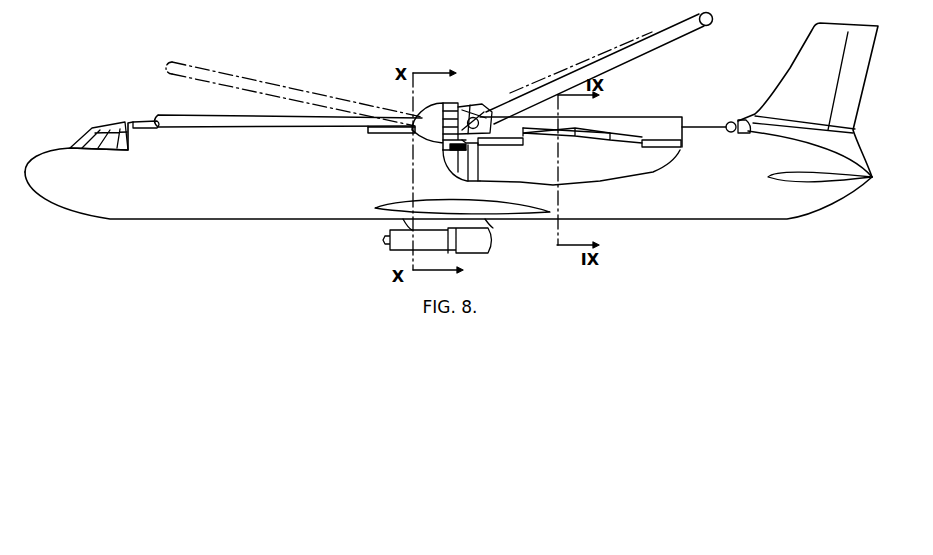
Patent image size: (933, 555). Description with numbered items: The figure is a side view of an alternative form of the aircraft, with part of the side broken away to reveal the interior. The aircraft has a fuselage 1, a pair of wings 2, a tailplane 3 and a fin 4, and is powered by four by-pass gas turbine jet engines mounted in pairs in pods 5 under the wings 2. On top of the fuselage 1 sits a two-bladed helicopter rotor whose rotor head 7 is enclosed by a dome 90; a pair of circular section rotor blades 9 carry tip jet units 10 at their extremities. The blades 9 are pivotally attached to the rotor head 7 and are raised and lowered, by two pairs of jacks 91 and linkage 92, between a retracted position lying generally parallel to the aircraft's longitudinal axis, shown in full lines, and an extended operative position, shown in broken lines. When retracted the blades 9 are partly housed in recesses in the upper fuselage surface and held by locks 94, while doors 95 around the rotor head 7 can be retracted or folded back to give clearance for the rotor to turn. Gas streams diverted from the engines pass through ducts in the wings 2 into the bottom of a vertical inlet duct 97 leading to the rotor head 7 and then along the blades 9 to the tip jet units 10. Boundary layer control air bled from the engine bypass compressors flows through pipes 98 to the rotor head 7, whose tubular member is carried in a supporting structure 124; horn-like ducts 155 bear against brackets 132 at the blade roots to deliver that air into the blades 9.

The fuselage 1 is at (261, 216).
The wings 2 is at (432, 205).
The tailplane 3 is at (800, 181).
The fin 4 is at (862, 83).
The pods 5 is at (428, 247).
The rotor head 7 is at (458, 114).
The rotor blades 9 is at (221, 119).
The tip jet units 10 is at (730, 121).
The dome 90 is at (447, 103).
The jacks 91 is at (512, 141).
The linkage 92 is at (610, 142).
The locks 94 is at (146, 120).
The doors 95 is at (380, 135).
The vertical inlet duct 97 is at (443, 163).
The pipes 98 is at (472, 172).
The supporting structure 124 is at (443, 143).
The brackets 132 is at (480, 122).
The horn-like duct 155 is at (472, 112).